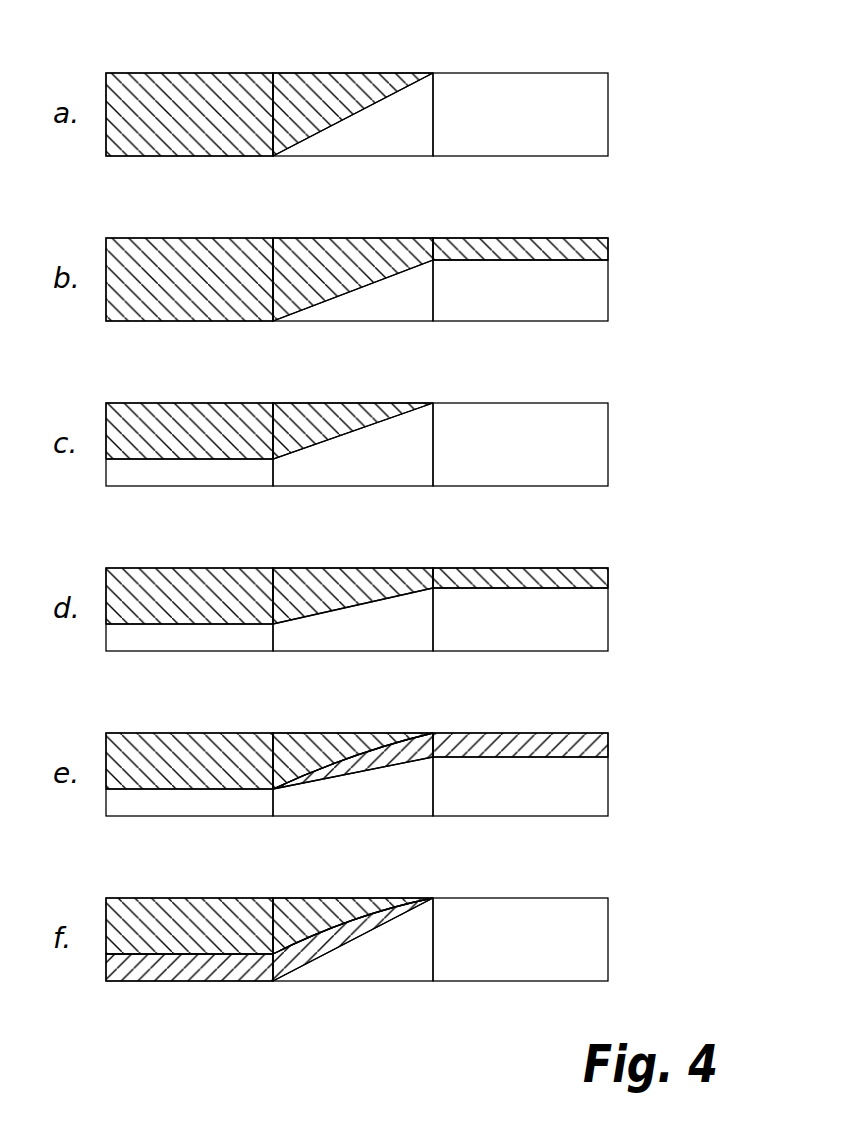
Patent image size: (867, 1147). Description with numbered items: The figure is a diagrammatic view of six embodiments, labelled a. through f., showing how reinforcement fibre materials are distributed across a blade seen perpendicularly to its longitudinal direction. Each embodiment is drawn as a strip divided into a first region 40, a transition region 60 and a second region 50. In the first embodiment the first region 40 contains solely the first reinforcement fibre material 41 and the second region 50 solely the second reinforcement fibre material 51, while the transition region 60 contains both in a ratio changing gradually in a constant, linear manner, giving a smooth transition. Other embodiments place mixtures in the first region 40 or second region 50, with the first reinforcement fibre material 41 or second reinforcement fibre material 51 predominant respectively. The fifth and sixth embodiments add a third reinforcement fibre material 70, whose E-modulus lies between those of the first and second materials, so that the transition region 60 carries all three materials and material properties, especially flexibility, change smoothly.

The first region 40 is at (189, 494).
The transition region 60 is at (747, 198).
The second region 50 is at (520, 494).
The first reinforcement fibre material 41 is at (228, 132).
The second reinforcement fibre material 51 is at (453, 132).
The third reinforcement fibre material 70 is at (440, 748).